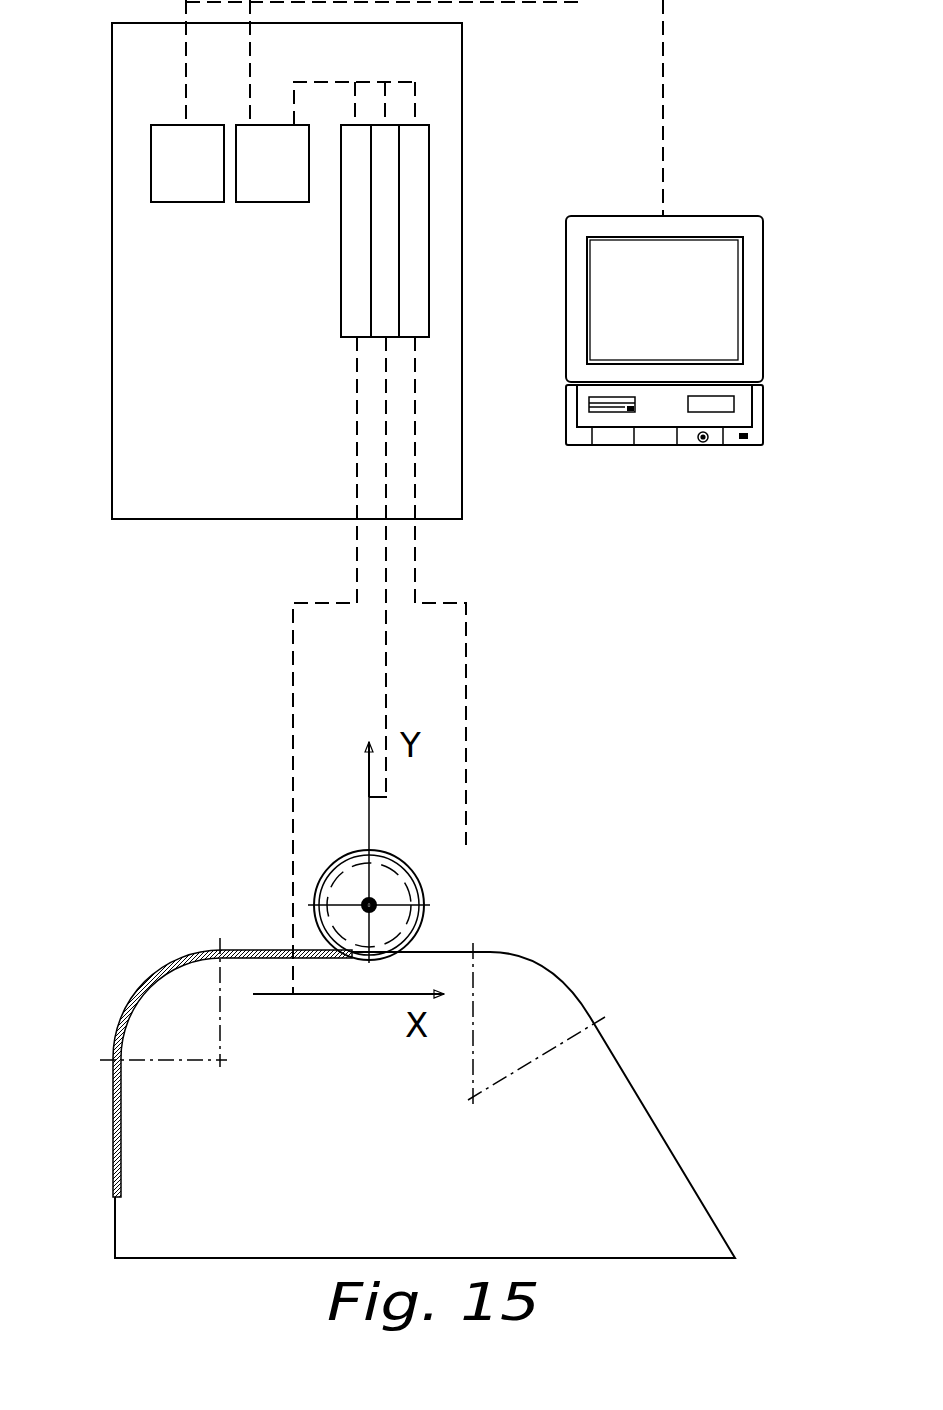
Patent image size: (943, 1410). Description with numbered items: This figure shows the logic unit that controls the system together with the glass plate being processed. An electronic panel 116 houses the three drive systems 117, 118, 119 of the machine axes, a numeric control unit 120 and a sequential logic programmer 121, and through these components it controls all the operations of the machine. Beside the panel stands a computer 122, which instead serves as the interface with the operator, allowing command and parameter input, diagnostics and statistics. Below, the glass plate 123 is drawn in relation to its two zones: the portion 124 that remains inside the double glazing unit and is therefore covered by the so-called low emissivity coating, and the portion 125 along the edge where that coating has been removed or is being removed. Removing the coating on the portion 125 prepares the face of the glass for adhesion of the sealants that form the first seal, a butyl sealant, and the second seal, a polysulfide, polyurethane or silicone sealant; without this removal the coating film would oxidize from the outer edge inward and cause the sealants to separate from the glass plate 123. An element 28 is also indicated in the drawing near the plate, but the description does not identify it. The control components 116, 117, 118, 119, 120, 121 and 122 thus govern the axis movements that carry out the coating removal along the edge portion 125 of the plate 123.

The roller 28 is at (392, 891).
The electronic panel 116 is at (147, 480).
The drive system 117 is at (432, 103).
The drive system 118 is at (385, 231).
The drive system 119 is at (414, 231).
The numeric control unit 120 is at (266, 183).
The sequential logic programmer 121 is at (192, 190).
The computer 122 is at (766, 256).
The glass plate 123 is at (596, 958).
The portion of the glass plate 124 is at (229, 1101).
The portion of the glass plate 125 is at (134, 1002).